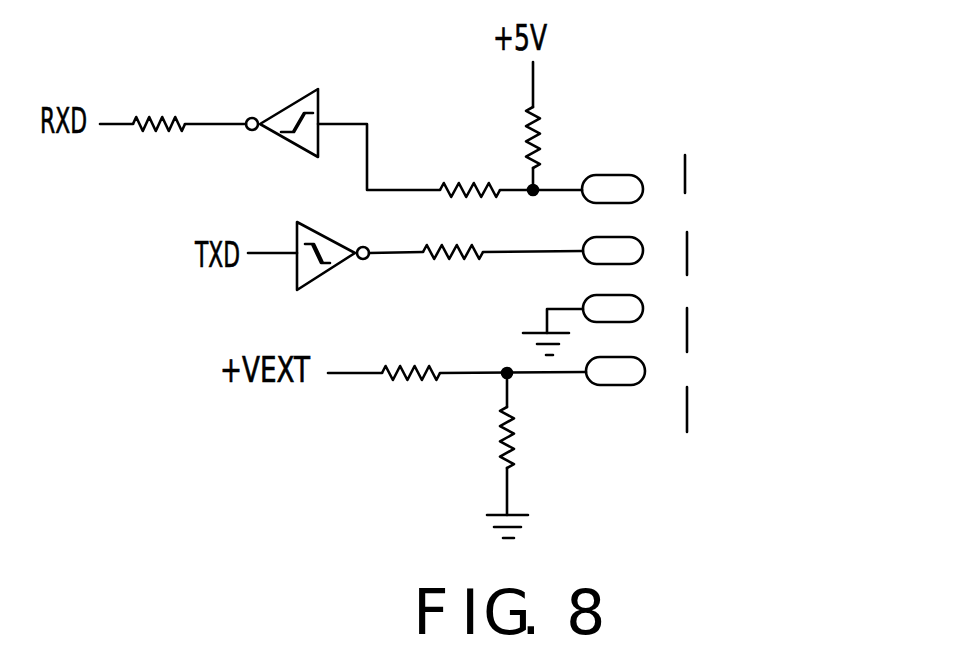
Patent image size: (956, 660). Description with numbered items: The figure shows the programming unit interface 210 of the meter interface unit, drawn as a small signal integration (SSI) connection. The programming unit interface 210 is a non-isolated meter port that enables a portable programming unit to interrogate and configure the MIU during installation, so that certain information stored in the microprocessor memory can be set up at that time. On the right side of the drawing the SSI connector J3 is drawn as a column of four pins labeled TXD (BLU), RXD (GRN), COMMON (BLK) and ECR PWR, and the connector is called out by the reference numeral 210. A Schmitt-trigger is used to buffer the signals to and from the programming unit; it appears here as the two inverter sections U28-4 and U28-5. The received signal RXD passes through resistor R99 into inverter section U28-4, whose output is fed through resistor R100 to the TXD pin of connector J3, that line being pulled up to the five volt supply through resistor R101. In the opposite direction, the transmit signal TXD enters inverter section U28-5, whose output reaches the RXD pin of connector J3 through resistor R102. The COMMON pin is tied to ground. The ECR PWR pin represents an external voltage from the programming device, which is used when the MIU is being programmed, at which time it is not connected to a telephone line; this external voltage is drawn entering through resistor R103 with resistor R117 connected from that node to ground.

The programming unit interface 210 is at (751, 226).
The connector J3 is at (613, 258).
The resistor R99 is at (159, 105).
The resistor R100 is at (467, 151).
The pull-up resistor R101 is at (560, 126).
The resistor R102 is at (454, 272).
The resistor R103 is at (410, 354).
The resistor R117 is at (541, 420).
The Schmitt inverter U28-4 is at (287, 101).
The Schmitt inverter U28-5 is at (348, 242).